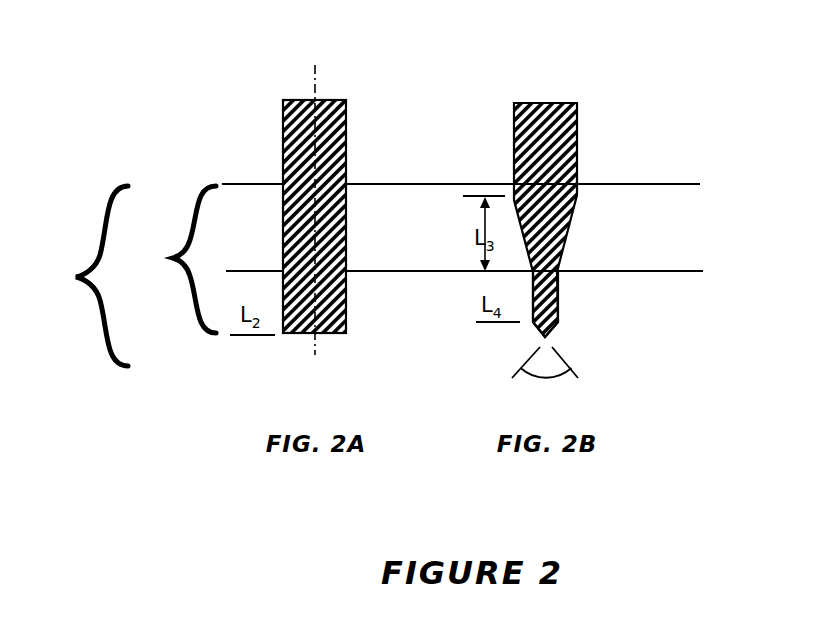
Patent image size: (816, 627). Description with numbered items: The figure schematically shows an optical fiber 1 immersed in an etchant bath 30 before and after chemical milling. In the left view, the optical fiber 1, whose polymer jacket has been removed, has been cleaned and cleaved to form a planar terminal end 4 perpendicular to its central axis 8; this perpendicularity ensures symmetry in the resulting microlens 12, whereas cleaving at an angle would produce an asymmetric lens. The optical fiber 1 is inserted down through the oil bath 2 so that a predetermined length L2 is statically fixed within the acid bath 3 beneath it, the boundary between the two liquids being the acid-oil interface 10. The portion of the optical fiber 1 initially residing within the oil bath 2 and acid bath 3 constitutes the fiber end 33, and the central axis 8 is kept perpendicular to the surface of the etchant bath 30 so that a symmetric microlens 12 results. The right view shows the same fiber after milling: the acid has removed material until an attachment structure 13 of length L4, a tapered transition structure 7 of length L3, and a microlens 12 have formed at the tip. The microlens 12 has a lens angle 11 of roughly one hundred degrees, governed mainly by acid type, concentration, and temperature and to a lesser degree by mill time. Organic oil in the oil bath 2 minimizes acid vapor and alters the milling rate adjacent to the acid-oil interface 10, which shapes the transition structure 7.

In FIG. 2A, the optical fiber 1 is at (290, 113).
In FIG. 2A, the central axis 8 is at (318, 63).
In FIG. 2A, the terminal end 4 is at (307, 341).
In FIG. 2A, the etchant bath 30 is at (80, 276).
In FIG. 2A, the fiber end 33 is at (210, 258).
In FIG. 2A, the oil bath 2 is at (419, 254).
In FIG. 2A, the acid bath 3 is at (419, 341).
In FIG. 2B, the transition structure 7 is at (580, 225).
In FIG. 2B, the acid-oil interface 10 is at (708, 268).
In FIG. 2B, the attachment structure 13 is at (561, 303).
In FIG. 2B, the microlens 12 is at (556, 331).
In FIG. 2B, the lens angle 11 is at (565, 376).